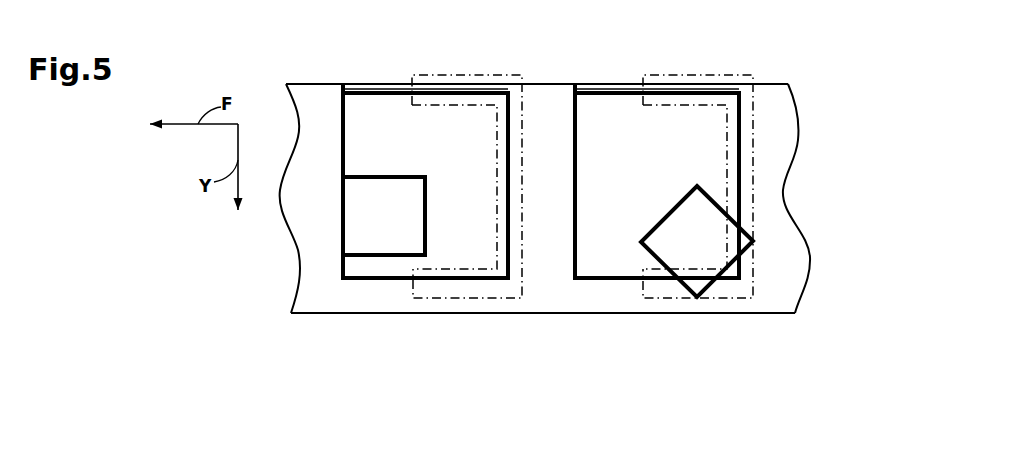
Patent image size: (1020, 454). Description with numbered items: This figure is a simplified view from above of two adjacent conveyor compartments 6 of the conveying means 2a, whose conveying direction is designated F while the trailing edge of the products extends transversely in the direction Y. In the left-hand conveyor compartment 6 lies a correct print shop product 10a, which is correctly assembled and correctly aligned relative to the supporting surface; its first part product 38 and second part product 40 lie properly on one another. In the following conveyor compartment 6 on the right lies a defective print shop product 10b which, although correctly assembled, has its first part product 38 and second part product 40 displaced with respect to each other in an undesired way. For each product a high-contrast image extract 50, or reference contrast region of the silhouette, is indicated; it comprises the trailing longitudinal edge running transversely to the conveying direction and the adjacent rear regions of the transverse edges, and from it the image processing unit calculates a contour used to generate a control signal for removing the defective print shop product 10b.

The conveying means 2a is at (786, 108).
The conveyor compartment 6 is at (370, 297).
The correct print shop product 10a is at (402, 285).
The defective print shop product 10b is at (657, 287).
The first part product 38 is at (463, 253).
The second part product 40 is at (353, 229).
The high-contrast image extract 50 is at (448, 287).